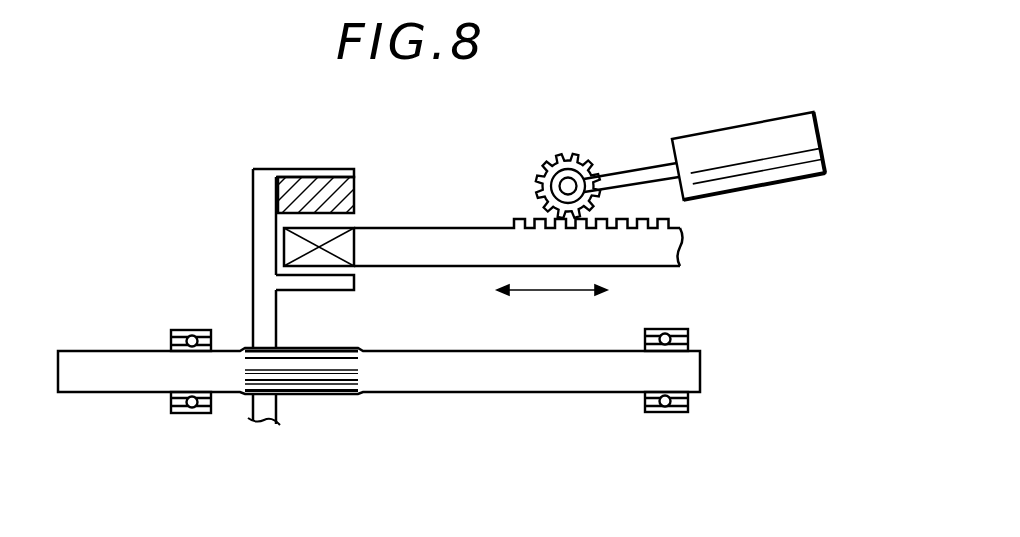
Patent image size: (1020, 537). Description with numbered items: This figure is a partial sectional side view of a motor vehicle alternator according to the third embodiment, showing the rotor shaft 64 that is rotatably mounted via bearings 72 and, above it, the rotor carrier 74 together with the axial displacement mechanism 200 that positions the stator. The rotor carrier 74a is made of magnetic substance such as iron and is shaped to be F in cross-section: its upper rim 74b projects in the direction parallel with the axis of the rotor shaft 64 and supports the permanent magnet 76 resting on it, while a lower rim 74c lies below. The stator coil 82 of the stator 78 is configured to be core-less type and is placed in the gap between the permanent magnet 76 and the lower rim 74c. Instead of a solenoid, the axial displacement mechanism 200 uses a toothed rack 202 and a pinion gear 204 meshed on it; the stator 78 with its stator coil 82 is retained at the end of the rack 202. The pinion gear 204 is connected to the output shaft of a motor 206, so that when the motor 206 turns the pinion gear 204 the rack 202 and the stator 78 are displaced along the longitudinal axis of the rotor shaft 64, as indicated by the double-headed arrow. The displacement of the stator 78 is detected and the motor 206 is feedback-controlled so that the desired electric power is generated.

The rotor shaft 64 is at (512, 383).
The bearings 72 is at (195, 413).
The rotor carrier 74 is at (291, 264).
The rotor carrier 74a is at (253, 214).
The upper rim 74b is at (298, 172).
The lower rim 74c is at (314, 287).
The permanent magnet 76 is at (357, 196).
The stator 78 is at (579, 230).
The stator coil 82 is at (347, 248).
The axial displacement mechanism 200 is at (579, 264).
The toothed rack 202 is at (652, 253).
The pinion gear 204 is at (583, 157).
The motor 206 is at (758, 132).